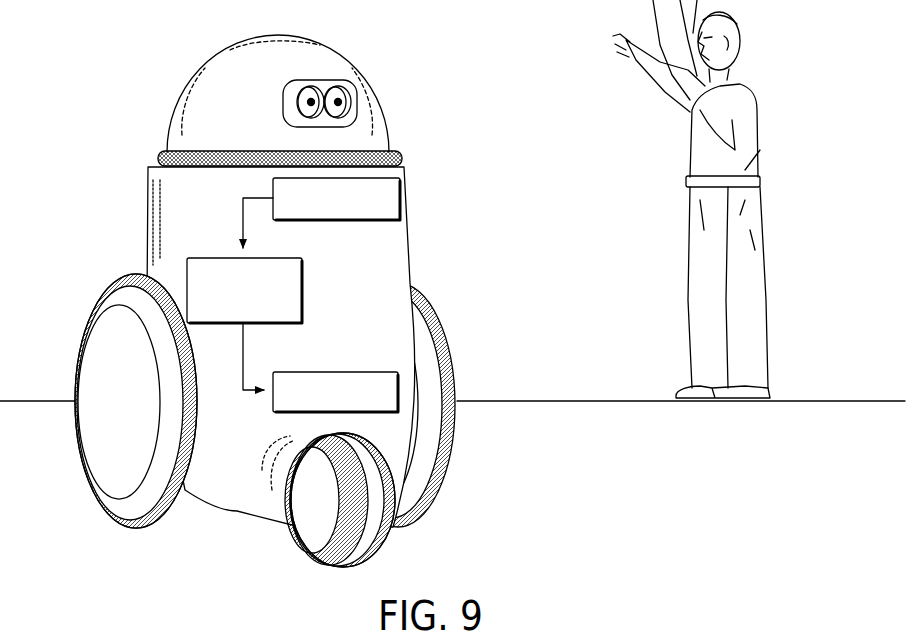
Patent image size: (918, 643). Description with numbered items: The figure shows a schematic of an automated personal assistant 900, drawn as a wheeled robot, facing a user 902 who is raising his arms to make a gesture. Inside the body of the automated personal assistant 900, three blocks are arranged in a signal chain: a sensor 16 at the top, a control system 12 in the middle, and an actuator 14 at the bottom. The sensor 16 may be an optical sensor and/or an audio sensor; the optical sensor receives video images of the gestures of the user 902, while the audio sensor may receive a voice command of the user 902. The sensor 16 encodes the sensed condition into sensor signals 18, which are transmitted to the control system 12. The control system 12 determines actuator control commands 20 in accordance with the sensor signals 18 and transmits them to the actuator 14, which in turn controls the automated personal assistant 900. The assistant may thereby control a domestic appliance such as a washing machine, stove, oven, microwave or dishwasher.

The automated personal assistant 900 is at (216, 50).
The user 902 is at (760, 133).
The control system 12 is at (303, 290).
The actuator 14 is at (356, 371).
The sensor 16 is at (360, 221).
The sensor signals 18 is at (242, 219).
The actuator control commands 20 is at (244, 345).